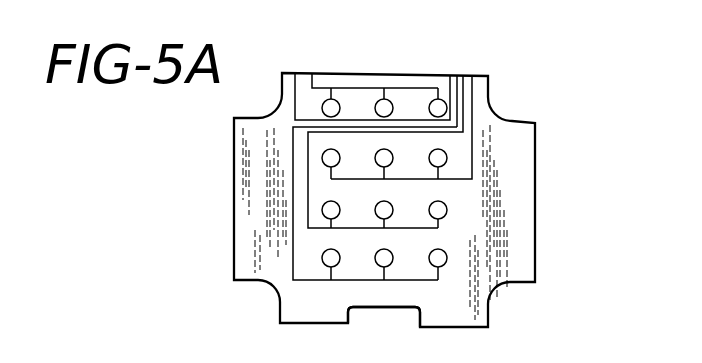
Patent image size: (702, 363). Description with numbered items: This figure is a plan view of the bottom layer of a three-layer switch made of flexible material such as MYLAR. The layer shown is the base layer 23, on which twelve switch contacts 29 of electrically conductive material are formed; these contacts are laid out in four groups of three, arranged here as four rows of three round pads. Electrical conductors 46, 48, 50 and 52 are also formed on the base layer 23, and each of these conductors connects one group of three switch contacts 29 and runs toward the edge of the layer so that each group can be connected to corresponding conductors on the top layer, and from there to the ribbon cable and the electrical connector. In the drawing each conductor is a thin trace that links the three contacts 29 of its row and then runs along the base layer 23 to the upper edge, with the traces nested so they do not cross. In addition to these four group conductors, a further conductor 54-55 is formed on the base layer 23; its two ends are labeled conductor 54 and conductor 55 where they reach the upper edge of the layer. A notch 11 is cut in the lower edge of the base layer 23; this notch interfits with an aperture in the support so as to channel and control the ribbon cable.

The base layer 23 is at (494, 96).
The notch 11 is at (375, 307).
The switch contacts 29 is at (436, 100).
The electrical conductor 52 is at (311, 73).
The conductor 54 is at (295, 73).
The electrical conductor 50 is at (472, 143).
The electrical conductor 48 is at (308, 168).
The electrical conductor 46 is at (293, 232).
The conductor 55 is at (452, 75).